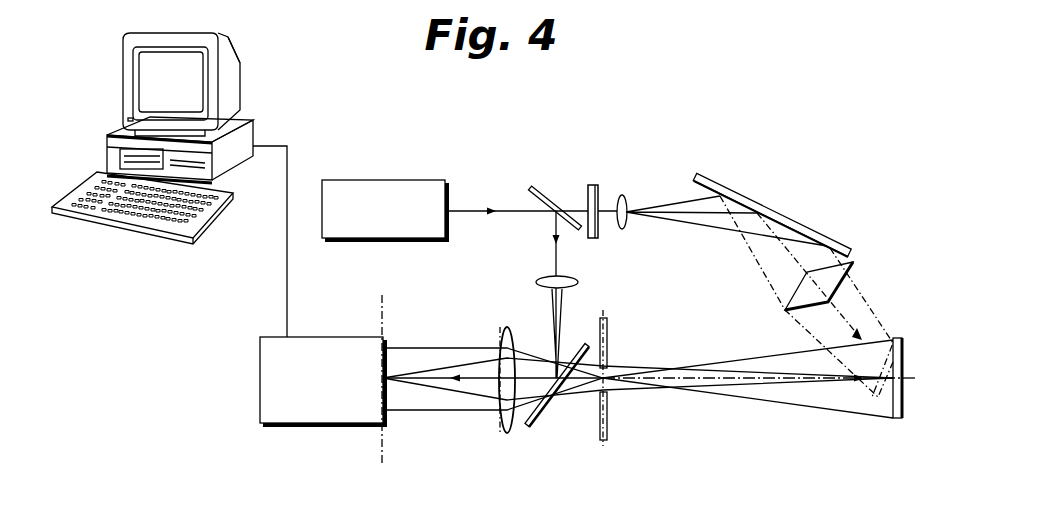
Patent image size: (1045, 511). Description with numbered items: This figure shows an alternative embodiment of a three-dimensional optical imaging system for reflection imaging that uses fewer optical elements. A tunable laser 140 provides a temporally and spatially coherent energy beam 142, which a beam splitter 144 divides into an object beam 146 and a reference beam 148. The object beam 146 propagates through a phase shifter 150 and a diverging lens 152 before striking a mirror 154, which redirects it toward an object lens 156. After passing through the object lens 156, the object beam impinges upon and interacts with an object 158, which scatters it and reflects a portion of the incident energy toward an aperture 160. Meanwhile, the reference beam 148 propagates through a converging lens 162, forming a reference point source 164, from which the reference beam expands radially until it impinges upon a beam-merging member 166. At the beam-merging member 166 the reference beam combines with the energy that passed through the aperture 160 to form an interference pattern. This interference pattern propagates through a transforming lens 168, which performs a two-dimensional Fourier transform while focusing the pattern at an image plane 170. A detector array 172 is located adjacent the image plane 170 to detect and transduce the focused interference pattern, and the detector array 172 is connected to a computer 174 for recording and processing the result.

The tunable laser 140 is at (390, 180).
The energy beam 142 is at (467, 209).
The beam splitter 144 is at (537, 186).
The object beam 146 is at (573, 208).
The reference beam 148 is at (548, 229).
The phase shifter 150 is at (600, 185).
The diverging lens 152 is at (628, 228).
The mirror 154 is at (733, 192).
The object lens 156 is at (848, 260).
The object 158 is at (897, 420).
The aperture 160 is at (607, 430).
The converging lens 162 is at (579, 283).
The reference point source 164 is at (538, 300).
The beam-merging member 166 is at (532, 420).
The transforming lens 168 is at (507, 435).
The image plane 170 is at (396, 320).
The detector array 172 is at (342, 427).
The computer 174 is at (142, 233).